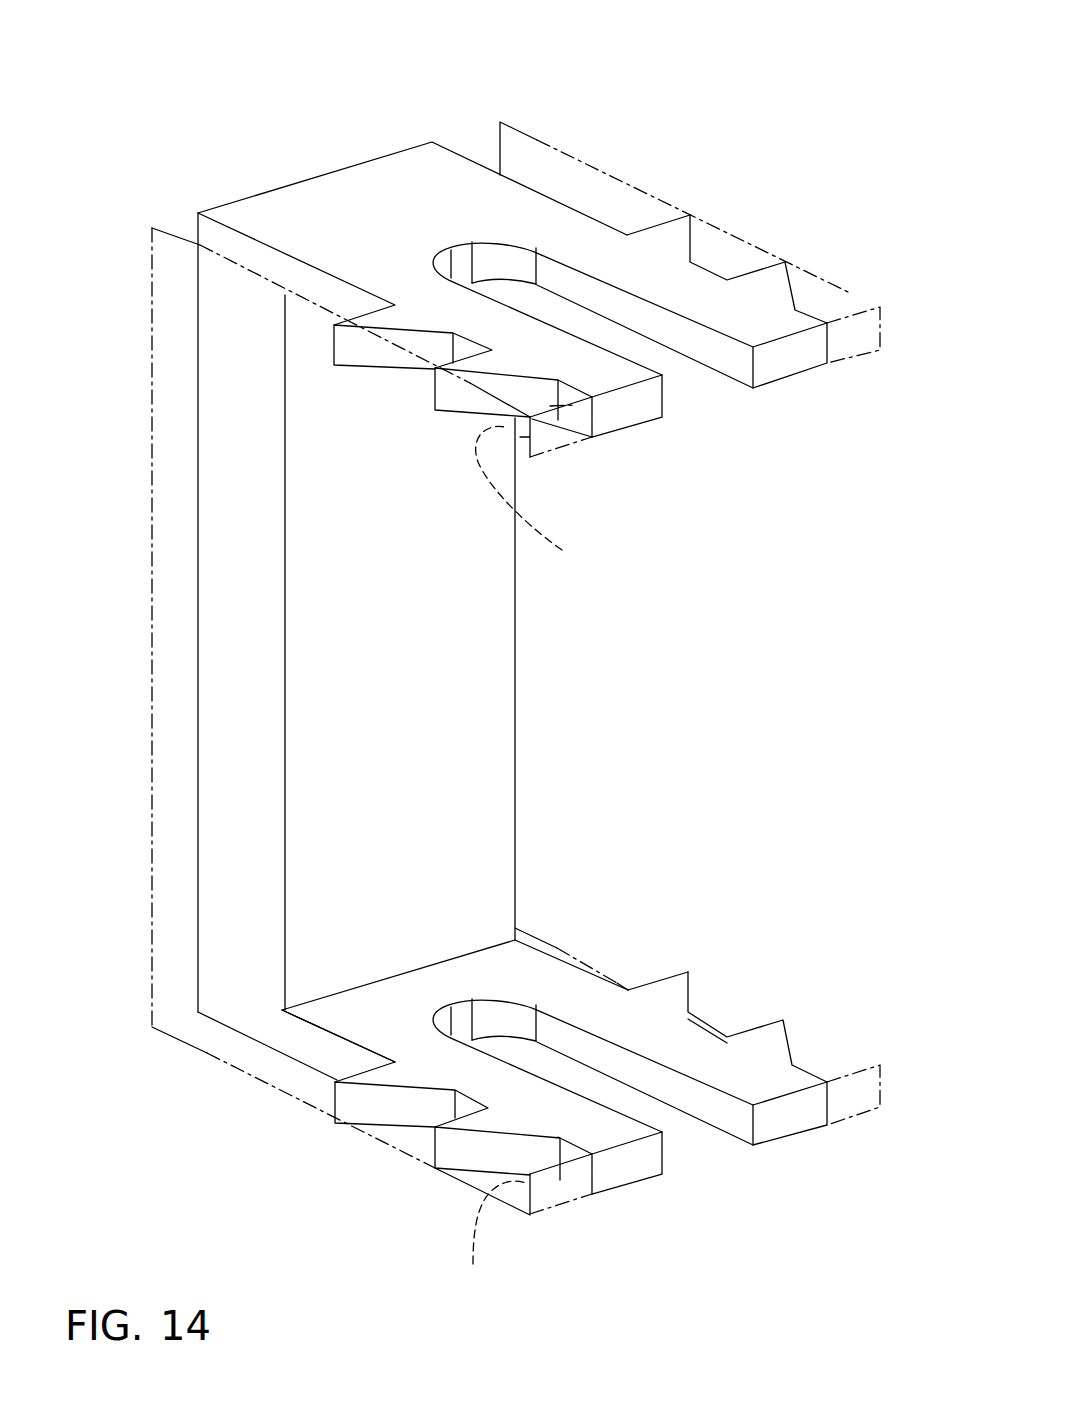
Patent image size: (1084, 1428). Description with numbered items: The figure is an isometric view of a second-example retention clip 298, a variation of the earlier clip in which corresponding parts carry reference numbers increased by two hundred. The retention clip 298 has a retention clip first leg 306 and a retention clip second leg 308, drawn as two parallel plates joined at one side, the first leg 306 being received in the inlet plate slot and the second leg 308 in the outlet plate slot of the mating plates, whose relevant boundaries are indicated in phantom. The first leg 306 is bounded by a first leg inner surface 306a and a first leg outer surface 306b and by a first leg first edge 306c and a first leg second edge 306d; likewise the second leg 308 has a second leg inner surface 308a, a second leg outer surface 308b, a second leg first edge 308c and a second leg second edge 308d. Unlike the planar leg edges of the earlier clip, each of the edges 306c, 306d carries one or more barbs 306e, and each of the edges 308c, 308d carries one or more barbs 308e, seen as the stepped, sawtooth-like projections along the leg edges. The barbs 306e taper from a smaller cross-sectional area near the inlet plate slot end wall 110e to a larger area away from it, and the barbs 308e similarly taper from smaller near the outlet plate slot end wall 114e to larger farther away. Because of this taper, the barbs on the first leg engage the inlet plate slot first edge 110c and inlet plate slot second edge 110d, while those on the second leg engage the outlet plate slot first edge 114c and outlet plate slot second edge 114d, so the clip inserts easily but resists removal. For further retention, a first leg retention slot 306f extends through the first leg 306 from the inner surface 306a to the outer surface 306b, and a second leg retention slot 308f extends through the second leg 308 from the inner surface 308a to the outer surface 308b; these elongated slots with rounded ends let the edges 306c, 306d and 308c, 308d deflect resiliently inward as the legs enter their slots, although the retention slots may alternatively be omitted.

The retention clip 298 is at (776, 65).
The retention clip first leg 306 is at (622, 1167).
The first leg inner surface 306a is at (600, 1130).
The first leg outer surface 306b is at (780, 1140).
The first leg first edge 306c is at (320, 1055).
The first leg second edge 306d is at (612, 980).
The barbs 306e is at (793, 1067).
The first leg retention slot 306f is at (682, 1132).
The retention clip second leg 308 is at (475, 304).
The second leg inner surface 308a is at (620, 430).
The second leg outer surface 308b is at (660, 280).
The second leg first edge 308c is at (575, 407).
The second leg second edge 308d is at (812, 318).
The barbs 308e is at (785, 262).
The second leg retention slot 308f is at (690, 377).
The inlet plate slot first edge 110c is at (315, 664).
The outlet plate slot first edge 114c is at (168, 233).
The inlet plate slot second edge 110d is at (665, 500).
The outlet plate slot second edge 114d is at (565, 173).
The outlet plate slot end wall 114e is at (553, 503).
The inlet plate slot end wall 110e is at (487, 1238).